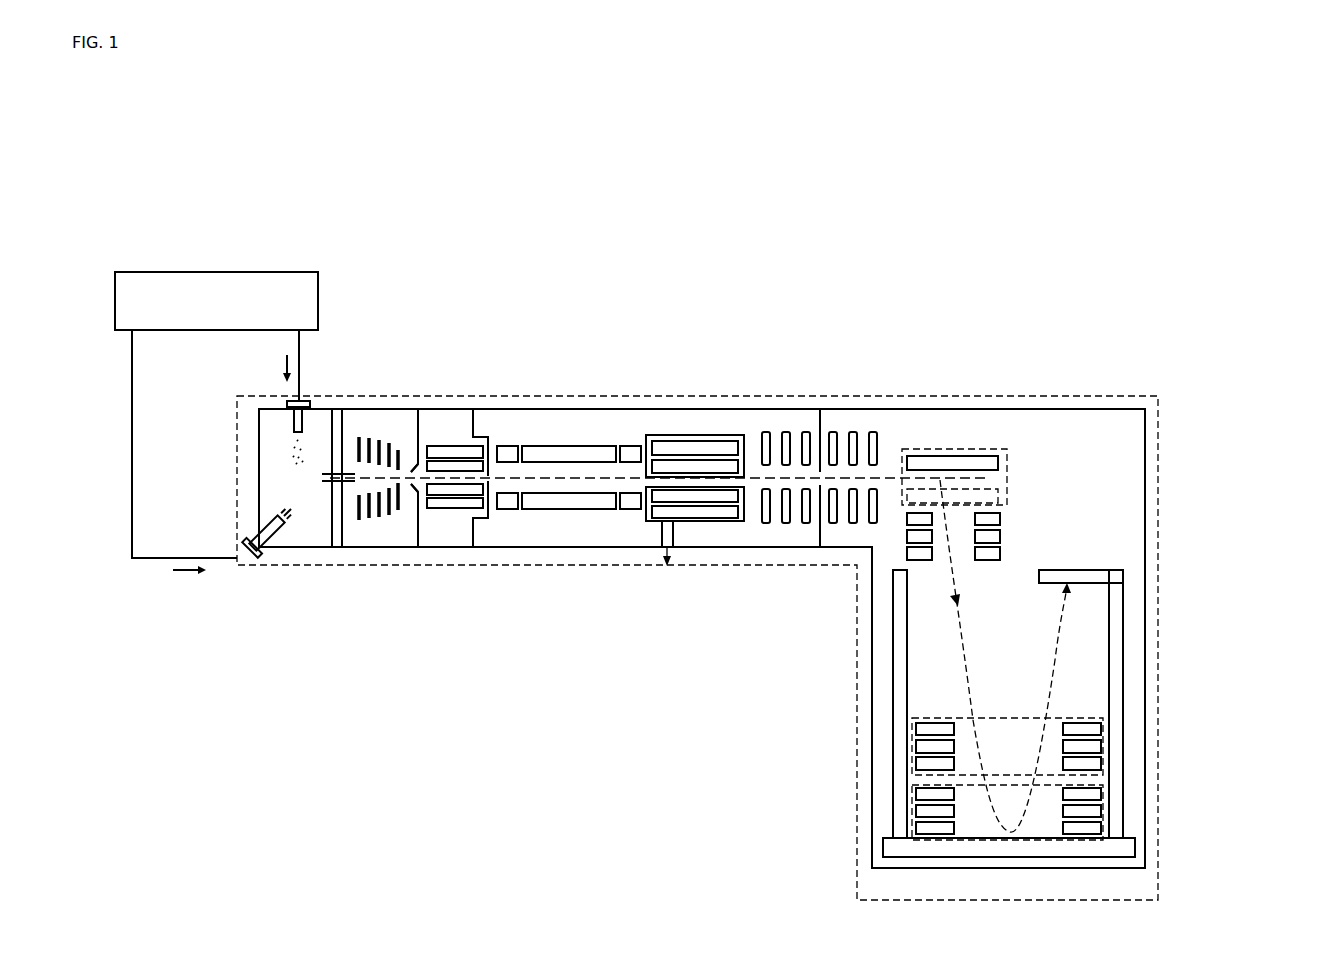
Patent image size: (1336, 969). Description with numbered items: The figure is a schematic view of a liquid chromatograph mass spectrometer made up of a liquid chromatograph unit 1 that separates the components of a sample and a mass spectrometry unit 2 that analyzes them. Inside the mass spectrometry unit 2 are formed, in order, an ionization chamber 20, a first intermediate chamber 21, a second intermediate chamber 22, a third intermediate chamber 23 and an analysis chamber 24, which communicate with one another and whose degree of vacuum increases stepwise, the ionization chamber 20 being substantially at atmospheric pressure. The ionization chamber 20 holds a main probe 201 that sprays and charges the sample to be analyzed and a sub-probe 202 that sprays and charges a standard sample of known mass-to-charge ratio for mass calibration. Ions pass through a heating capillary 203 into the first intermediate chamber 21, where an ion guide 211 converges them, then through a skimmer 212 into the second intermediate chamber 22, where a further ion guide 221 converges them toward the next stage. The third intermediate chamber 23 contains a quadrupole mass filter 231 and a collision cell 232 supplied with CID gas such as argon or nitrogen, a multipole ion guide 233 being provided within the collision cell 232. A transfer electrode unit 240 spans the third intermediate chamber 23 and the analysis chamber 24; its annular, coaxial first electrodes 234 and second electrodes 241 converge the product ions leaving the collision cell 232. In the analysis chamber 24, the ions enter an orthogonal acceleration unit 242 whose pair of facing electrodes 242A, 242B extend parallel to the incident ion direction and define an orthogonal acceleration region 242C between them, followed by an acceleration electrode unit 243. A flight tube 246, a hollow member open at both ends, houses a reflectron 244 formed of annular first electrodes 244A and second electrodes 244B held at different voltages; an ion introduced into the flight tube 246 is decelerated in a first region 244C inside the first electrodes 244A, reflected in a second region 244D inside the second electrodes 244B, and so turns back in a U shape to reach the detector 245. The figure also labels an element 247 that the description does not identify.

The liquid chromatograph unit 1 is at (320, 283).
The mass spectrometry unit 2 is at (1047, 396).
The ionization chamber 20 is at (268, 477).
The main probe 201 is at (280, 427).
The sub-probe 202 is at (257, 532).
The heating capillary 203 is at (328, 484).
The first intermediate chamber 21 is at (357, 548).
The ion guide 211 is at (361, 418).
The skimmer 212 is at (408, 484).
The second intermediate chamber 22 is at (447, 548).
The ion guide 221 is at (455, 446).
The third intermediate chamber 23 is at (530, 548).
The quadrupole mass filter 231 is at (572, 446).
The collision cell 232 is at (728, 434).
The multipole ion guide 233 is at (655, 436).
The first electrode 234 is at (801, 418).
The analysis chamber 24 is at (1117, 416).
The transfer electrode unit 240 is at (788, 323).
The second electrode 241 is at (867, 418).
The orthogonal acceleration unit 242 is at (1063, 431).
The electrode 242A is at (1008, 457).
The electrode 242B is at (1008, 493).
The orthogonal acceleration region 242C is at (986, 449).
The acceleration electrode unit 243 is at (1008, 513).
The reflectron 244 is at (1044, 779).
The first electrode 244A is at (1107, 746).
The second electrode 244B is at (1107, 809).
The first region 244C is at (958, 750).
The second region 244D is at (958, 815).
The detector 245 is at (1104, 566).
The flight tube 246 is at (1125, 612).
The flight space 247 is at (1150, 677).